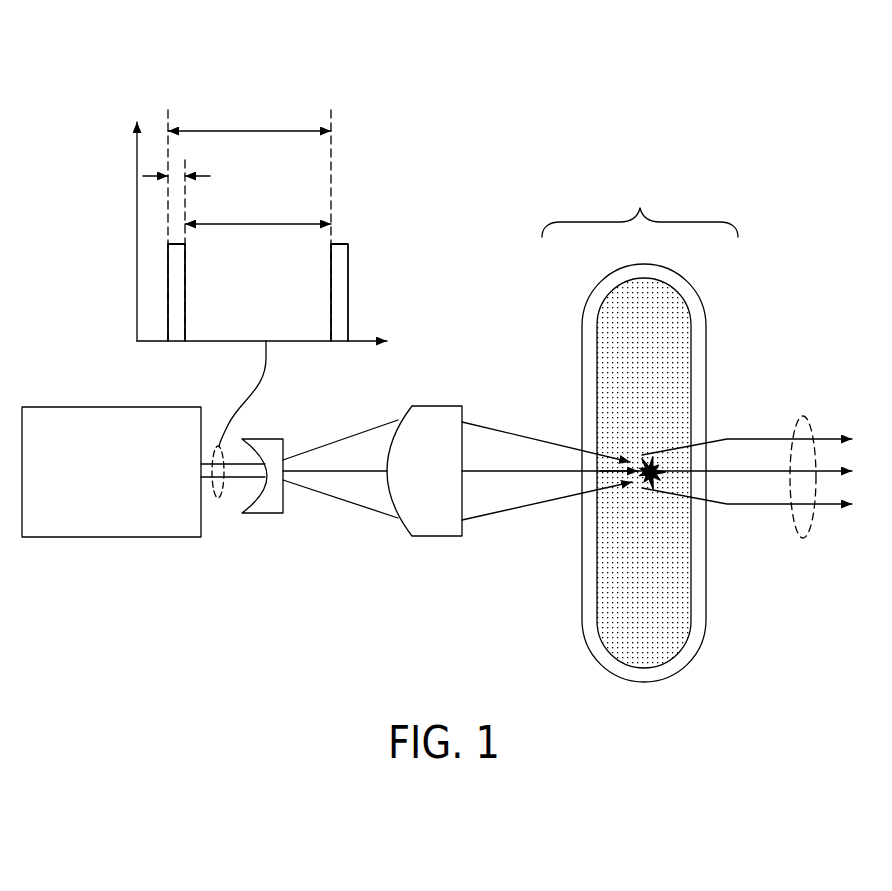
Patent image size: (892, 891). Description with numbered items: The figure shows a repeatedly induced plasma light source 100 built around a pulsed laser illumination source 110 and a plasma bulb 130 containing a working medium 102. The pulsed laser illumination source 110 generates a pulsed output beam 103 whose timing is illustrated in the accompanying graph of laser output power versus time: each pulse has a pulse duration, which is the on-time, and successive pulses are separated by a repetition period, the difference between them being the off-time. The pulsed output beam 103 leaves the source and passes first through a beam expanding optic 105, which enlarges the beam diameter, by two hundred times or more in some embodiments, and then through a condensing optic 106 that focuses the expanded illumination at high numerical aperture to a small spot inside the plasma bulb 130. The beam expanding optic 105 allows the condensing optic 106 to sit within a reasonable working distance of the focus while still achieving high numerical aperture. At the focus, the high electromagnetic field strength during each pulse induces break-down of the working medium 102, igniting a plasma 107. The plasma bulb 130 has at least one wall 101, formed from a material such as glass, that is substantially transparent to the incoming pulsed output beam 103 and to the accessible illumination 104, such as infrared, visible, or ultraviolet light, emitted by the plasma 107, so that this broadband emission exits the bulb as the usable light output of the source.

The repeatedly induced plasma light source 100 is at (98, 86).
The wall 101 is at (589, 296).
The working medium 102 is at (631, 337).
The pulsed output beam 103 is at (348, 244).
The accessible illumination 104 is at (803, 415).
The beam expanding optic 105 is at (267, 513).
The condensing optic 106 is at (432, 536).
The plasma 107 is at (658, 460).
The pulsed laser illumination source 110 is at (94, 523).
The plasma bulb 130 is at (640, 208).